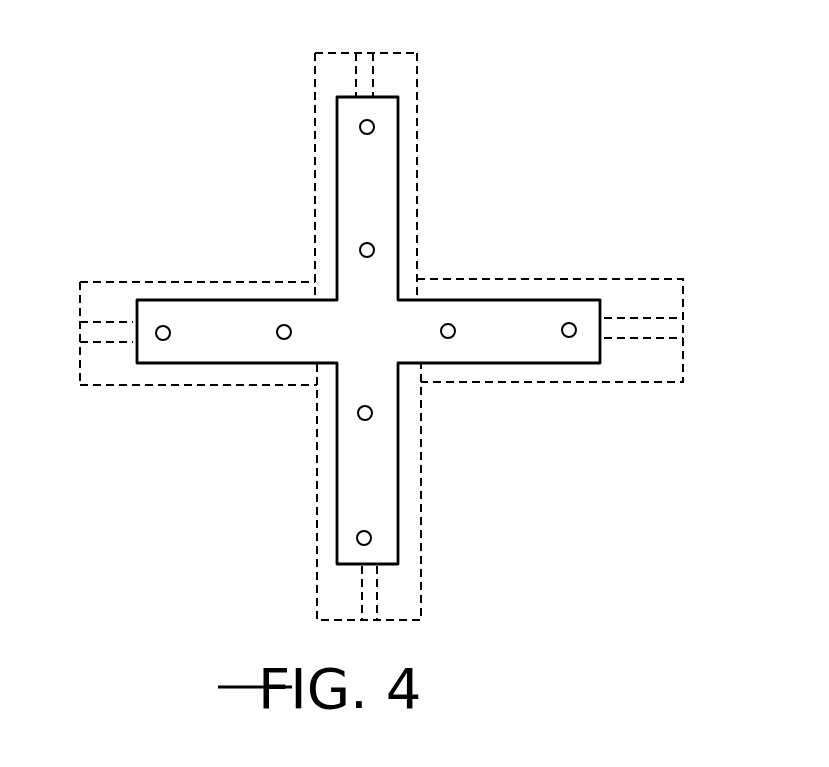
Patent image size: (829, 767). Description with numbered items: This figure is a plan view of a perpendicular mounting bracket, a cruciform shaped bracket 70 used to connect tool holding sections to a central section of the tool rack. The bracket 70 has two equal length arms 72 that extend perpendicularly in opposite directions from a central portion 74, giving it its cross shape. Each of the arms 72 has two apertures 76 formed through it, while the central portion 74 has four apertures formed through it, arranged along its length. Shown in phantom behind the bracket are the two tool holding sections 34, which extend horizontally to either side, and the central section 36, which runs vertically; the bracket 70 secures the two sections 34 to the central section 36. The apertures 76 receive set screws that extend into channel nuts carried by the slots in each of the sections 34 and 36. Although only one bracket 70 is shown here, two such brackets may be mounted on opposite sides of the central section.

The cruciform shaped bracket 70 is at (387, 91).
The central section 36 is at (419, 193).
The tool holding sections 34 is at (208, 280).
The central portion 74 is at (380, 205).
The bracket arms 72 is at (230, 343).
The apertures 76 is at (278, 335).